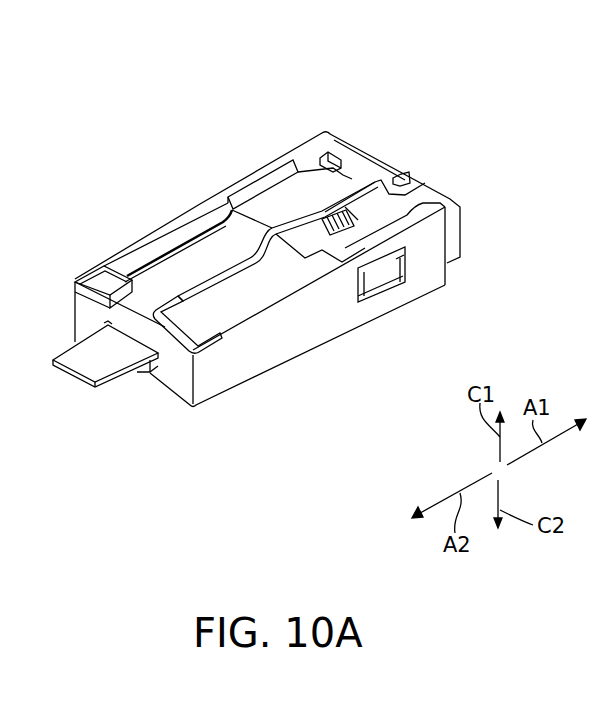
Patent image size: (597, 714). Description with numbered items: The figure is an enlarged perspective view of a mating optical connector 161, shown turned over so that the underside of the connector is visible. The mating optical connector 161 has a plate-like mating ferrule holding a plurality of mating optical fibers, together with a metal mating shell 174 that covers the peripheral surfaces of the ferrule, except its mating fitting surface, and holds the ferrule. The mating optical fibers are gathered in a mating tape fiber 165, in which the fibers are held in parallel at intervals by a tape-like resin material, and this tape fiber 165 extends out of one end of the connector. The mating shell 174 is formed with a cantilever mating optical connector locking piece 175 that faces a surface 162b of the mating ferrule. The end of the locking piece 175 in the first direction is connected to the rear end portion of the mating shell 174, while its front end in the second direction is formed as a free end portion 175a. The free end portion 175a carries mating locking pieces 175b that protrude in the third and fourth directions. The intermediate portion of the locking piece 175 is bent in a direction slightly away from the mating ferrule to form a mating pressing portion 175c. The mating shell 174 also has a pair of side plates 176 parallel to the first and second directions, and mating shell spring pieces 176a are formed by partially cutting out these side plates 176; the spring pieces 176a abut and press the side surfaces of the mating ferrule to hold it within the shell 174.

The mating optical connector 161 is at (155, 168).
The surface of the mating ferrule 162b is at (102, 278).
The mating tape fiber 165 is at (82, 370).
The mating shell 174 is at (343, 338).
The mating optical connector locking piece 175 is at (240, 268).
The free end portion 175a is at (362, 163).
The mating locking pieces 175b is at (343, 153).
The mating pressing portion 175c is at (270, 196).
The side plates 176 is at (300, 338).
The mating shell spring pieces 176a is at (382, 278).